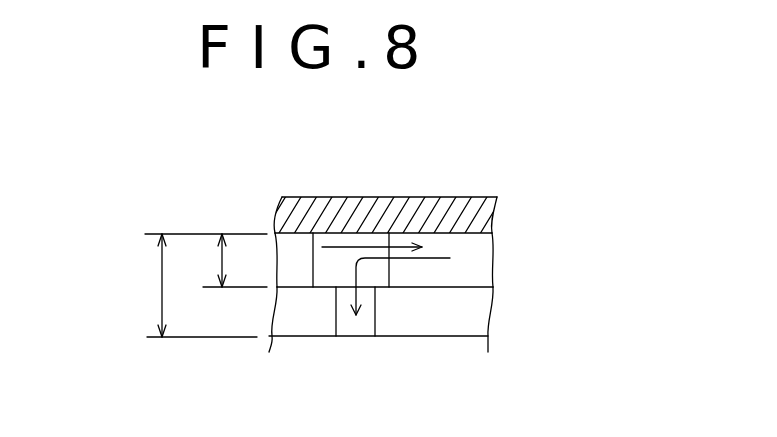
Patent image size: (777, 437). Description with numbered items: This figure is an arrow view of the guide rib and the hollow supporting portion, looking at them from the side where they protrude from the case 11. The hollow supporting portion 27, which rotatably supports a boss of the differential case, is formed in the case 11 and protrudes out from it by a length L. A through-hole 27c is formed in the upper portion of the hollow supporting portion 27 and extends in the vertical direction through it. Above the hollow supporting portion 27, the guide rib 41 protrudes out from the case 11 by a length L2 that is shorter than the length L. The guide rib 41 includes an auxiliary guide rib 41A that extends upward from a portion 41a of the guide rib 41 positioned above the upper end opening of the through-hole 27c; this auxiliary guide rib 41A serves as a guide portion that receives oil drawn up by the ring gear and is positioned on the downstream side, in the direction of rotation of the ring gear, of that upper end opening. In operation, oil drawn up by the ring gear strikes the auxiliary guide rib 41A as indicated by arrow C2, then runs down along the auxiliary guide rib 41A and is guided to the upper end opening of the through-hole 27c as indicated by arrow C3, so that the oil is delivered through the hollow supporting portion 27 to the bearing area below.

The case 11 is at (473, 200).
The guide rib 41 is at (472, 251).
The auxiliary guide rib 41A is at (485, 273).
The portion of the guide rib 41a is at (391, 273).
The hollow supporting portion 27 is at (447, 336).
The through-hole 27c is at (335, 322).
The arrow C2 is at (341, 246).
The arrow C3 is at (433, 257).
The length L is at (199, 285).
The length L2 is at (222, 260).